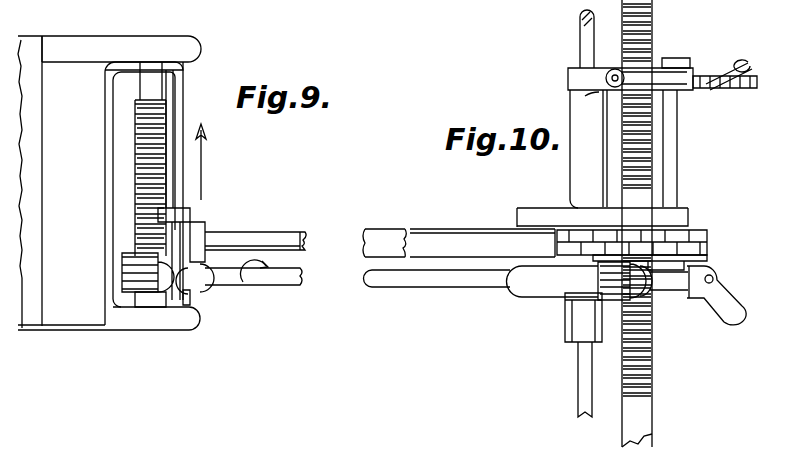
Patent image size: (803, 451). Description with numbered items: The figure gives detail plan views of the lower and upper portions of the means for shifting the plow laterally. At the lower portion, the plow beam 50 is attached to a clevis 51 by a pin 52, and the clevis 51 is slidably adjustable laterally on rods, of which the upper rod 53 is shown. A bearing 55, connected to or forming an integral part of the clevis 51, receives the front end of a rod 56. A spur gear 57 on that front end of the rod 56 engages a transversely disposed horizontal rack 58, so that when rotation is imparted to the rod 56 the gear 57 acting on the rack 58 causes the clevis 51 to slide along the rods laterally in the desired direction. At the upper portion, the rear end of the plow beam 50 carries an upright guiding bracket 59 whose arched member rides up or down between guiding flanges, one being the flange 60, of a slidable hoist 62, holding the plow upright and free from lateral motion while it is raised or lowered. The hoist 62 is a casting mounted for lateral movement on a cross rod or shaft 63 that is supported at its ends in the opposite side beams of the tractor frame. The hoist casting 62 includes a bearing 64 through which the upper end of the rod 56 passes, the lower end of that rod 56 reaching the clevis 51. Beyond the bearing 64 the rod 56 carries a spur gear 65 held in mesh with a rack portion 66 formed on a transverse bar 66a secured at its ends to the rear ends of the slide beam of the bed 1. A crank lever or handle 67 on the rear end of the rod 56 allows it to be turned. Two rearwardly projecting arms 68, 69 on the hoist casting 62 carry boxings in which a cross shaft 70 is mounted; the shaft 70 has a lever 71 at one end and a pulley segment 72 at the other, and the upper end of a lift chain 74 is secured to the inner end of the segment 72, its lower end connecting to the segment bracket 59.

In FIG. 9, the bed 1 is at (48, 42).
In FIG. 9, the plow beam 50 is at (290, 238).
In FIG. 10, the plow beam 50 is at (385, 232).
In FIG. 9, the clevis 51 is at (220, 252).
In FIG. 9, the pin 52 is at (198, 224).
In FIG. 9, the upper rod 53 is at (183, 88).
In FIG. 9, the bearing 55 is at (135, 290).
In FIG. 9, the rod 56 is at (278, 280).
In FIG. 10, the rod 56 is at (422, 282).
In FIG. 9, the spur gear 57 is at (145, 280).
In FIG. 9, the rack 58 is at (138, 142).
In FIG. 10, the upright guiding bracket 59 is at (453, 234).
In FIG. 10, the guiding flange 60 is at (536, 206).
In FIG. 10, the slidable hoist 62 is at (568, 84).
In FIG. 10, the cross rod or shaft 63 is at (580, 52).
In FIG. 10, the bearing 64 is at (528, 295).
In FIG. 10, the spur gear 65 is at (648, 298).
In FIG. 10, the rack portion 66 is at (652, 152).
In FIG. 10, the transverse bar 66a is at (654, 424).
In FIG. 10, the crank lever or handle 67 is at (718, 295).
In FIG. 10, the rearwardly projecting arm 68 is at (688, 92).
In FIG. 10, the rearwardly projecting arm 69 is at (690, 212).
In FIG. 10, the cross shaft 70 is at (677, 128).
In FIG. 10, the lever 71 is at (708, 70).
In FIG. 10, the pulley segment 72 is at (692, 240).
In FIG. 10, the lift chain 74 is at (708, 252).